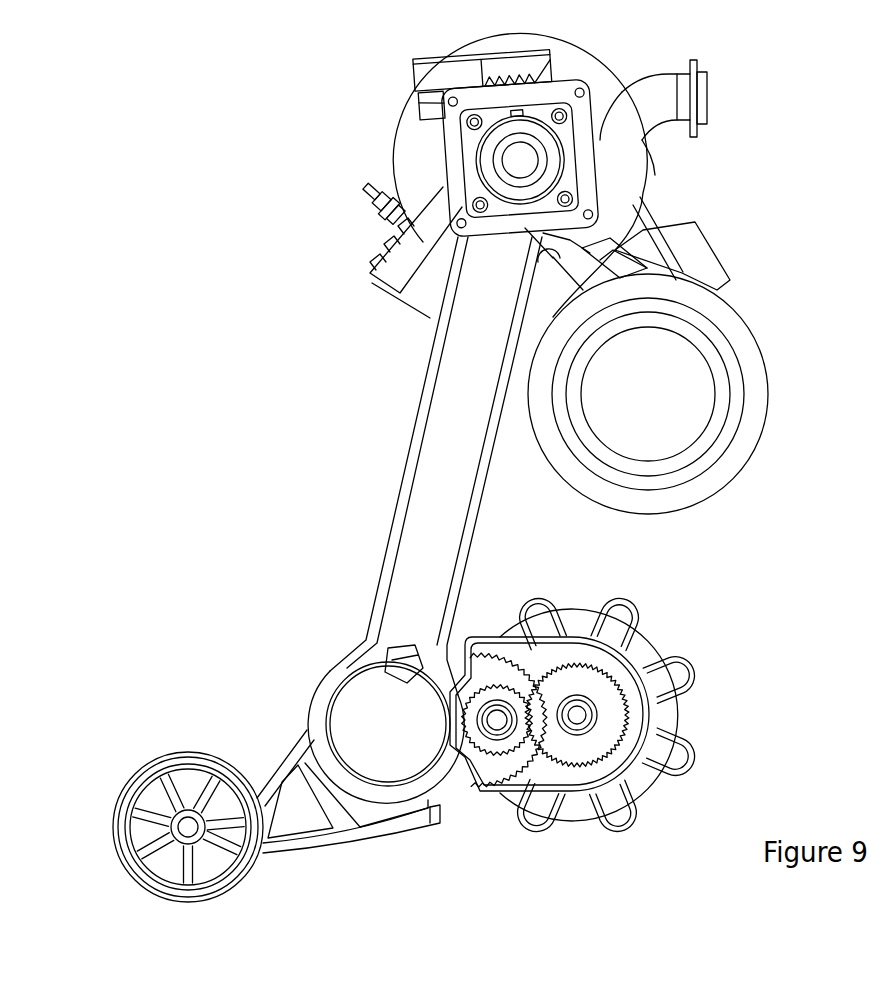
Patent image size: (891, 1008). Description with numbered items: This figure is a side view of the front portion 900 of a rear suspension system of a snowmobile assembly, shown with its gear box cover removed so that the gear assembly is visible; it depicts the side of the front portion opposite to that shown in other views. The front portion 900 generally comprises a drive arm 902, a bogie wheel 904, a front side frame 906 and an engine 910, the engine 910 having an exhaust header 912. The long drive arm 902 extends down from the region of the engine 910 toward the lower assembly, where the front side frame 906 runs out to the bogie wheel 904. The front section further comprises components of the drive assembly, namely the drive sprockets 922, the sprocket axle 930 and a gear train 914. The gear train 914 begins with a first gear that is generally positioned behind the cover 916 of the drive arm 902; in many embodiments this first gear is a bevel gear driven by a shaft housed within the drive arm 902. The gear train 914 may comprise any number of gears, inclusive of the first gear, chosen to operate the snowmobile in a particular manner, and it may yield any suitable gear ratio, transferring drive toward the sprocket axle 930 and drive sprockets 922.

The front portion 900 is at (156, 83).
The drive arm 902 is at (447, 462).
The bogie wheel 904 is at (172, 763).
The front side frame 906 is at (288, 775).
The engine 910 is at (765, 396).
The exhaust header 912 is at (710, 102).
The gear train 914 is at (533, 745).
The cover 916 is at (406, 730).
The drive sprockets 922 is at (683, 674).
The sprocket axle 930 is at (578, 714).